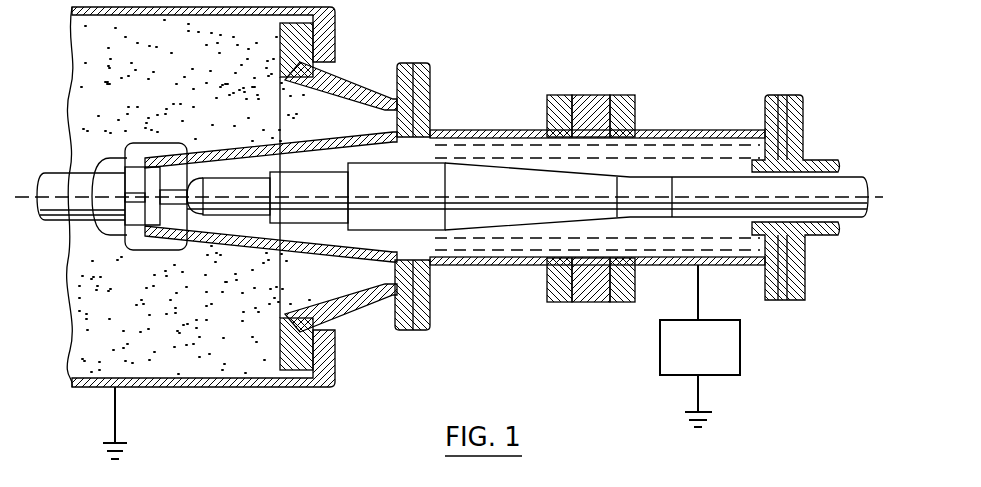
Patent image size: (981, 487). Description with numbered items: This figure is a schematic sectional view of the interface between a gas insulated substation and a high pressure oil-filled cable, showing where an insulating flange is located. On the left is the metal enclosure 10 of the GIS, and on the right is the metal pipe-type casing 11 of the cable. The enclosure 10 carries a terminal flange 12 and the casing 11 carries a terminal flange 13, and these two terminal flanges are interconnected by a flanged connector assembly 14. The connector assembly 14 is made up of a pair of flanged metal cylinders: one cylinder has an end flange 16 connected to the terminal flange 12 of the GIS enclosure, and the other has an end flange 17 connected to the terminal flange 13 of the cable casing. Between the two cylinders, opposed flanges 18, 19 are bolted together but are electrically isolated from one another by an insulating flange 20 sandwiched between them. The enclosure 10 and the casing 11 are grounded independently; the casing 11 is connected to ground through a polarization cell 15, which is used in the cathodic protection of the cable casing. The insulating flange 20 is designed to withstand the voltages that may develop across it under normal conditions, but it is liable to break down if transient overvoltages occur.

The metal enclosure 10 is at (298, 388).
The metal pipe-type casing 11 is at (827, 236).
The terminal flange 12 is at (405, 331).
The terminal flange 13 is at (797, 301).
The flanged connector assembly 14 is at (528, 278).
The polarization cell 15 is at (660, 341).
The end flange 16 is at (430, 80).
The end flange 17 is at (765, 102).
The opposed flange 18 is at (548, 97).
The opposed flange 19 is at (640, 97).
The insulating flange 20 is at (590, 95).